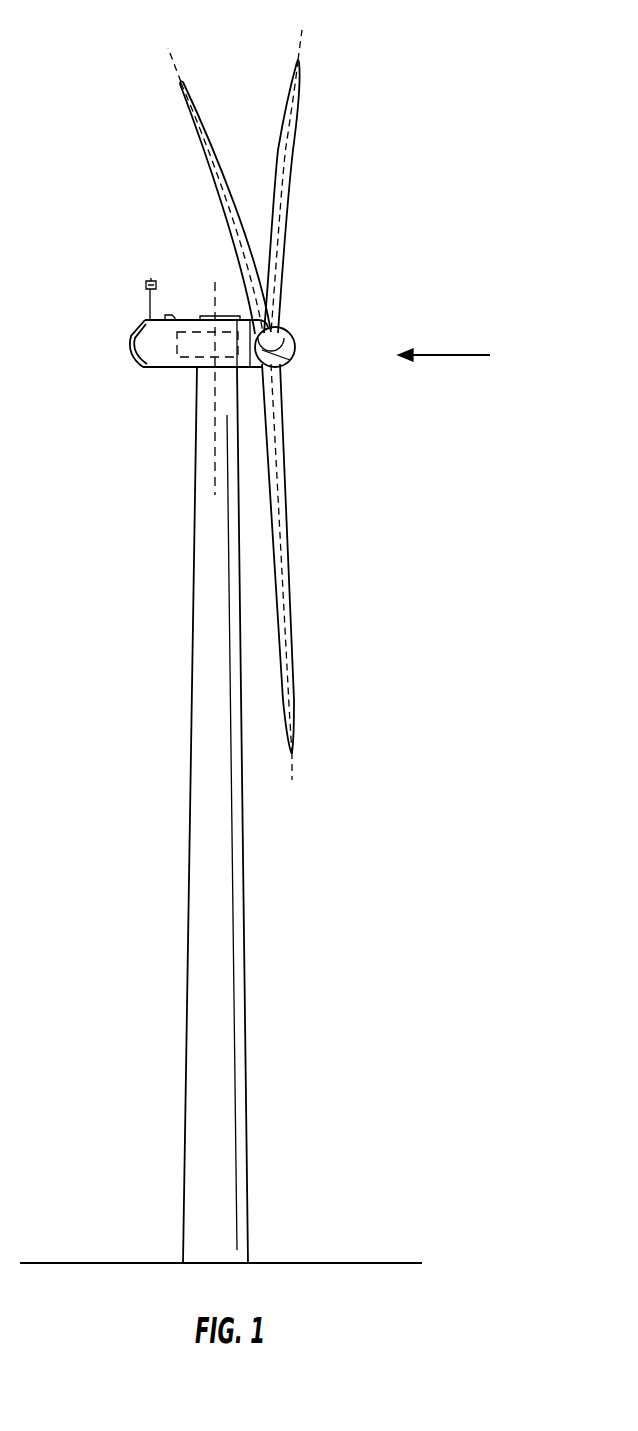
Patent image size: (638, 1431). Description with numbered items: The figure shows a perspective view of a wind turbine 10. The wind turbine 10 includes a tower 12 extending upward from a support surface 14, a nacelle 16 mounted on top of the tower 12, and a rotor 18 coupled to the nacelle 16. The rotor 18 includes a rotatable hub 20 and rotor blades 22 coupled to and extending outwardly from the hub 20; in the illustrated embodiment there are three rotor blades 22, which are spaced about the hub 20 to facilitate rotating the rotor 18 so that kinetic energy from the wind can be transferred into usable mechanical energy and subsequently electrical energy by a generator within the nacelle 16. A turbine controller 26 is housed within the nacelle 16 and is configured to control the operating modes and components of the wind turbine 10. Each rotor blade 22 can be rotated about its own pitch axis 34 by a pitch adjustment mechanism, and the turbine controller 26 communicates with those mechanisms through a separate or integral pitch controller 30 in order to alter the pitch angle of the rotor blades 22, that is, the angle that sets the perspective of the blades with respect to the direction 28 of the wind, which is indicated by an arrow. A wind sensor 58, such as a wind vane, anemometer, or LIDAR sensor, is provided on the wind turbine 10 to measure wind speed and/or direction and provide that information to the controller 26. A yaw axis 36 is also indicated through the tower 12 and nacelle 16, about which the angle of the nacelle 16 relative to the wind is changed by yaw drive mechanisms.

The wind turbine 10 is at (426, 178).
The tower 12 is at (238, 945).
The support surface 14 is at (103, 1263).
The nacelle 16 is at (162, 368).
The rotor 18 is at (305, 311).
The rotatable hub 20 is at (294, 348).
The rotor blade 22 is at (284, 174).
The turbine controller 26 is at (194, 331).
The direction of the wind 28 is at (450, 355).
The pitch controller 30 is at (293, 364).
The pitch axis 34 is at (172, 68).
The yaw axis 36 is at (214, 438).
The wind sensor 58 is at (150, 303).